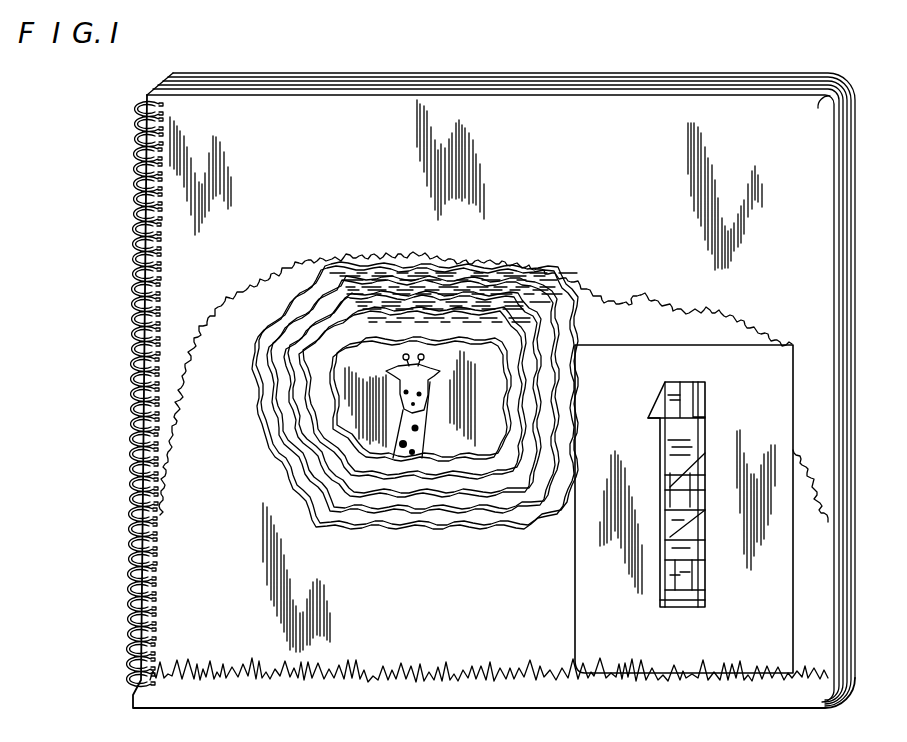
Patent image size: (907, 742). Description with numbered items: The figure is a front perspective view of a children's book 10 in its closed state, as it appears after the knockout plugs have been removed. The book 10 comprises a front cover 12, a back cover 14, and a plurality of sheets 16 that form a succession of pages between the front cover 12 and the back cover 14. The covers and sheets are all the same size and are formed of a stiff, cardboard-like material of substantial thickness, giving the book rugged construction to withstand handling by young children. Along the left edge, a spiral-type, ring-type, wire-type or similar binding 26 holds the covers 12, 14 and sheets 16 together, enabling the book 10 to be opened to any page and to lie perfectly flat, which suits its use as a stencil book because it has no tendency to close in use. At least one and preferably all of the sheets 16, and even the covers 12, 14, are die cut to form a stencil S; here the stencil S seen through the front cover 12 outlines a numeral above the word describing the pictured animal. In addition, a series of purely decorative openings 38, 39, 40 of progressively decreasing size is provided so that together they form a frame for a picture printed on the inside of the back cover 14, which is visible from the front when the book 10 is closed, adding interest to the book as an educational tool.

The book 10 is at (273, 70).
The front cover 12 is at (818, 108).
The back cover 14 is at (842, 81).
The sheets 16 is at (706, 88).
The binding 26 is at (133, 135).
The decorative opening 38 is at (368, 294).
The decorative opening 39 is at (430, 298).
The decorative opening 40 is at (452, 320).
The stencil S is at (674, 372).